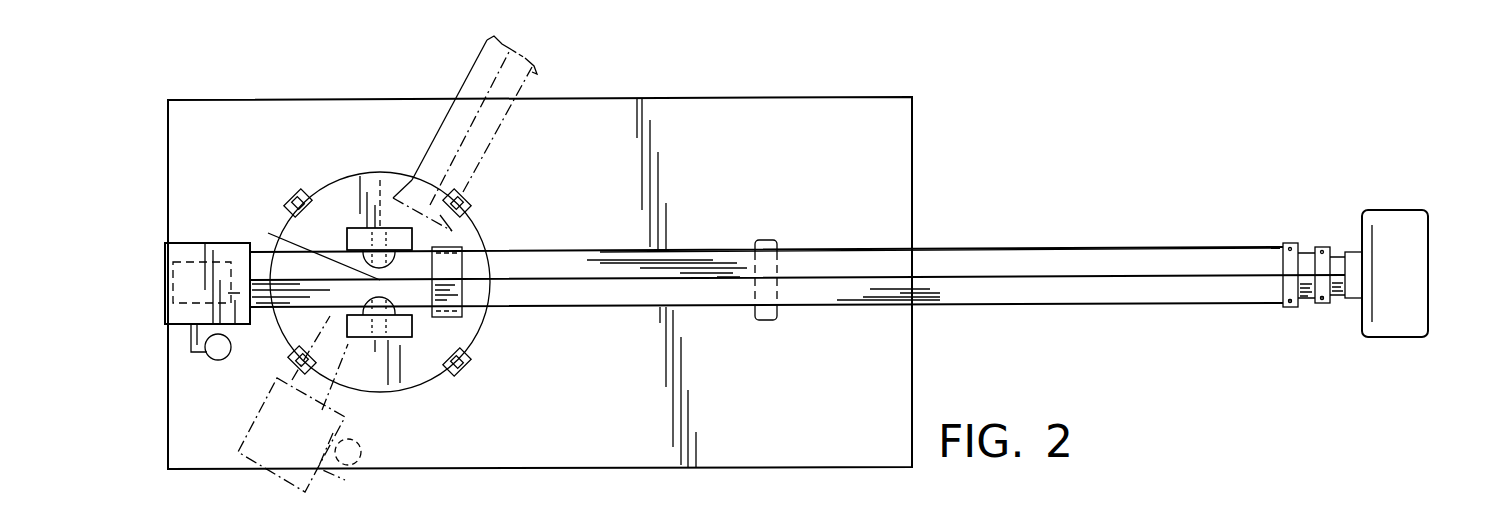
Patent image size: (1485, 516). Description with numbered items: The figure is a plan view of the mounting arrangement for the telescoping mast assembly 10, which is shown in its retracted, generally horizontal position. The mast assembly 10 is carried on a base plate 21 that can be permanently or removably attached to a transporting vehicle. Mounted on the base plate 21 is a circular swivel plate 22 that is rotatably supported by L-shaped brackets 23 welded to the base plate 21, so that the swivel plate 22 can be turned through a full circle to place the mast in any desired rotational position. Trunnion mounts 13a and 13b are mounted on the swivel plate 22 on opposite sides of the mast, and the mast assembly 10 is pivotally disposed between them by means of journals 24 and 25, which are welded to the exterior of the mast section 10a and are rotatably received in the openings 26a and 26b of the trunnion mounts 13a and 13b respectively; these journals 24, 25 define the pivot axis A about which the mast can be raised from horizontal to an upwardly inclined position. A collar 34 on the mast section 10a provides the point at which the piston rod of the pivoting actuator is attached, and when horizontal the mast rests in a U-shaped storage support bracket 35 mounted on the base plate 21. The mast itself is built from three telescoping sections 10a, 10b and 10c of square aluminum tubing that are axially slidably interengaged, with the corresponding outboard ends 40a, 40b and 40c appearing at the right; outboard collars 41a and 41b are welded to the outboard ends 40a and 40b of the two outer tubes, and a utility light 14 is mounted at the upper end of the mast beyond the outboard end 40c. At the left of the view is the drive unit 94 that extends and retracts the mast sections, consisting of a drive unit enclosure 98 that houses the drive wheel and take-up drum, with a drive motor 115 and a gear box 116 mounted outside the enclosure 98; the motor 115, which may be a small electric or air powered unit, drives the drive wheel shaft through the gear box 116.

The telescoping mast assembly 10 is at (970, 232).
The mast section 10a is at (1097, 257).
The mast section 10b is at (1308, 250).
The mast section 10c is at (1338, 257).
The utility light 14 is at (1408, 220).
The base plate 21 is at (892, 137).
The swivel plate 22 is at (332, 192).
The L-shaped brackets 23 is at (290, 200).
The journal 24 is at (405, 252).
The journal 25 is at (412, 322).
The trunnion mount 13a is at (353, 228).
The trunnion mount 13b is at (405, 337).
The opening 26a is at (395, 177).
The opening 26b is at (360, 322).
The collar 34 is at (453, 270).
The U-shaped storage support bracket 35 is at (773, 317).
The outboard end 40a is at (1278, 260).
The outboard end 40b is at (1310, 300).
The outboard end 40c is at (1347, 285).
The outboard collar 41a is at (1288, 290).
The outboard collar 41b is at (1332, 302).
The drive unit 94 is at (180, 355).
The drive unit enclosure 98 is at (200, 240).
The drive motor 115 is at (217, 353).
The gear box 116 is at (197, 345).
The pivot axis A is at (315, 244).